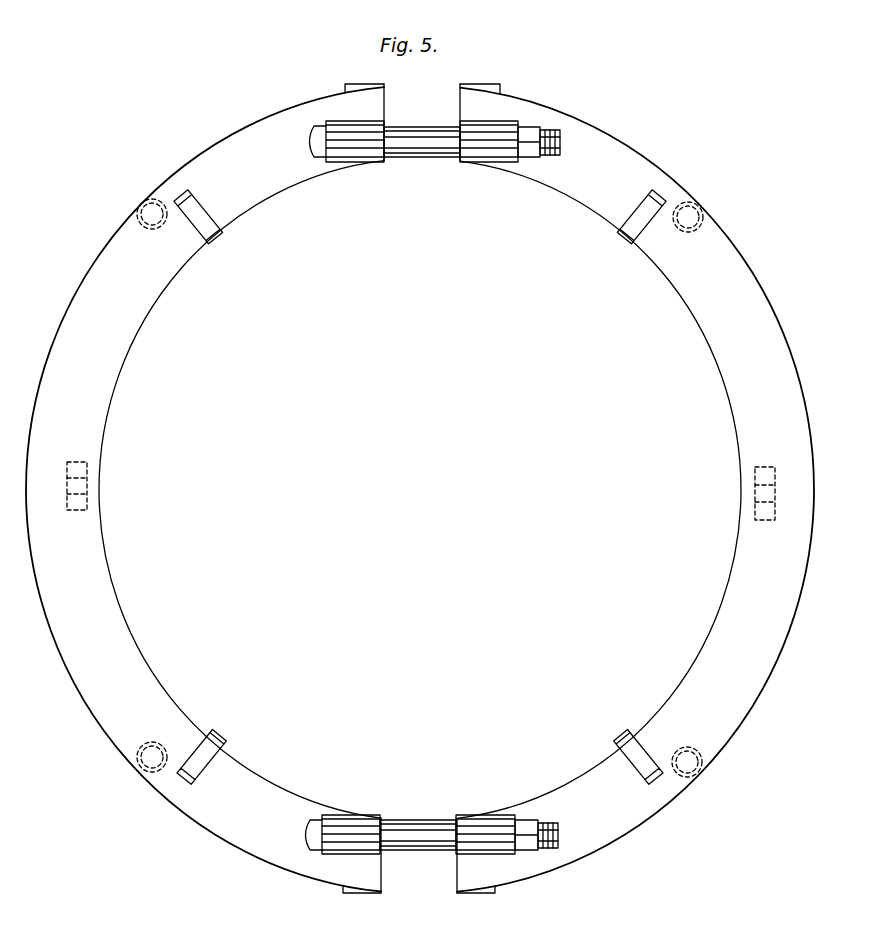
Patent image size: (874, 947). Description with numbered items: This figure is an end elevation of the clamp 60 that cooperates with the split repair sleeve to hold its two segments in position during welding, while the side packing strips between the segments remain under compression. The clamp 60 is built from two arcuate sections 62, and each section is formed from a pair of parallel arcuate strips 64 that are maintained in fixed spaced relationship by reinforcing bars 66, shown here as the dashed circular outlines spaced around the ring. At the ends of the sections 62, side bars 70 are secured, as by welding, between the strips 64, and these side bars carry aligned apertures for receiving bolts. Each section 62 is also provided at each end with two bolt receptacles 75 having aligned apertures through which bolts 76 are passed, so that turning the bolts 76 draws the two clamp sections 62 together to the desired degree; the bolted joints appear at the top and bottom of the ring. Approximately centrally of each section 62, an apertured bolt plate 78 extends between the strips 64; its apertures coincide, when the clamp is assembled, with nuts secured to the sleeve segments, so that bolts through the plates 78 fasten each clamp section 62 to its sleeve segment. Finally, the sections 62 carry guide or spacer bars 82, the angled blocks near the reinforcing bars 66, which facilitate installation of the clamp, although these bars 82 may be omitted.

The clamp 60 is at (420, 489).
The arcuate section 62 is at (225, 148).
The arcuate strip 64 is at (738, 726).
The reinforcing bar 66 is at (146, 203).
The side bar 70 is at (354, 86).
The bolt receptacle 75 is at (357, 156).
The bolt 76 is at (425, 148).
The bolt plate 78 is at (87, 468).
The guide or spacer bar 82 is at (213, 240).